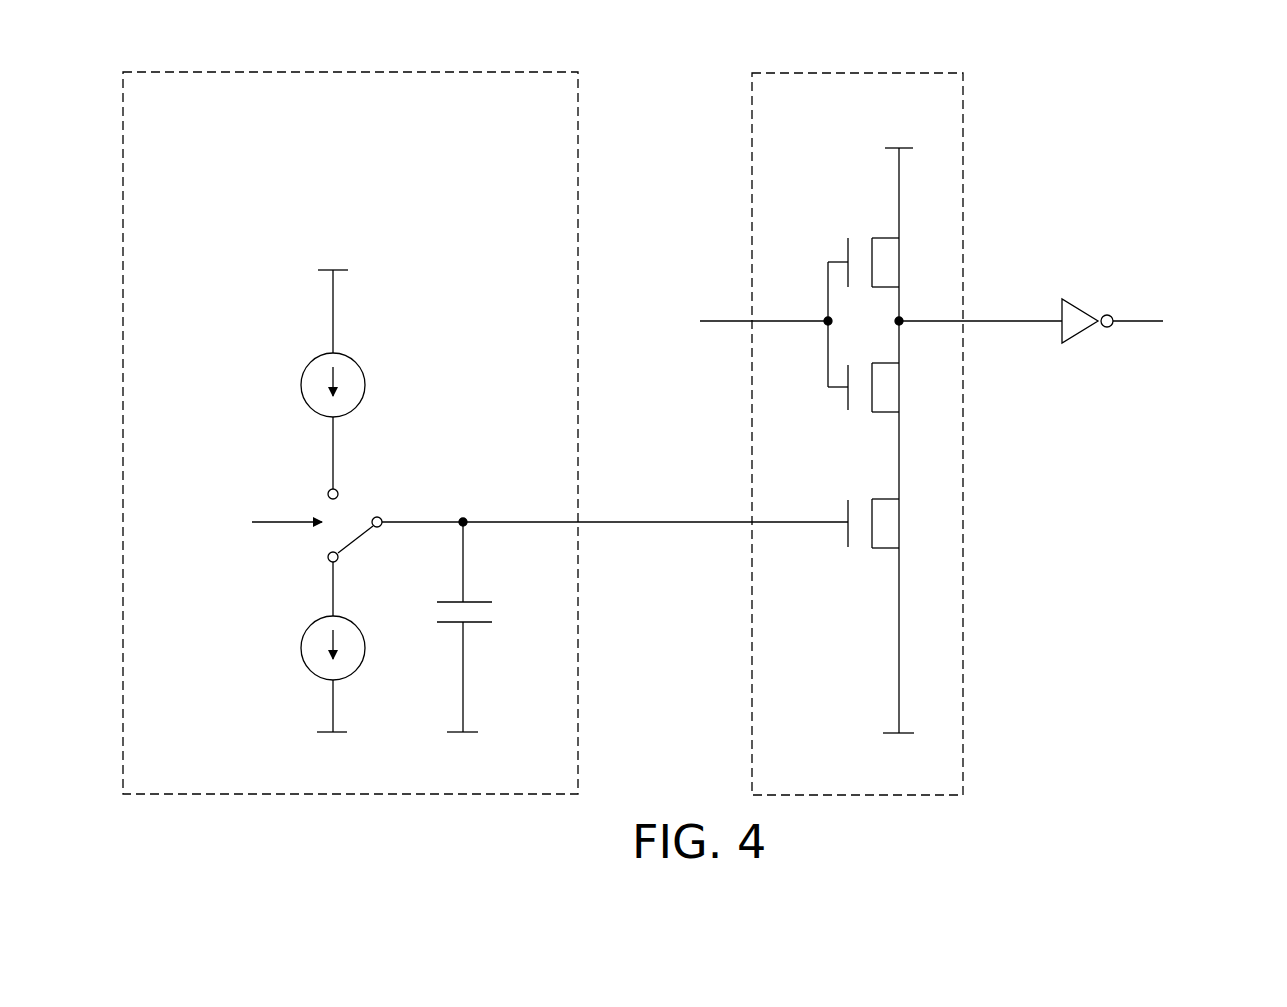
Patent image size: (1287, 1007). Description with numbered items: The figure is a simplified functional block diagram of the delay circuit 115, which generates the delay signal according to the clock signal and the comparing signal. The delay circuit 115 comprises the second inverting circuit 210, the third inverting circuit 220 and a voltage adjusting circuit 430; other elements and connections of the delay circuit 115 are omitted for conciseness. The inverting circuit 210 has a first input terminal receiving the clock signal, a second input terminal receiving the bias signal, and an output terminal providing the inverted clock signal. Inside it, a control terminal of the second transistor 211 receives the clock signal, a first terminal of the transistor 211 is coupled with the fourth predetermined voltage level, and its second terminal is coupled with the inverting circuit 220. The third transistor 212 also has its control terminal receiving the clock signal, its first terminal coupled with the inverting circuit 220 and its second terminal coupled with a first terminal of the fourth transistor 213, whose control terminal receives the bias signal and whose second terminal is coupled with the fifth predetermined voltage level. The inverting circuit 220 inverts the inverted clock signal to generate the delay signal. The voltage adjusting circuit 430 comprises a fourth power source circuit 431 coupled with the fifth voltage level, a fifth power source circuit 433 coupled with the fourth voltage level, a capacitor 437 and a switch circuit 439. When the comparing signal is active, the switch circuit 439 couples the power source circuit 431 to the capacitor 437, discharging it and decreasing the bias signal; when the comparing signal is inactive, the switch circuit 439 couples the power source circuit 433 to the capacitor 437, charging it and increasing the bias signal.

The delay circuit 115 is at (1118, 147).
The second inverting circuit 210 is at (752, 140).
The second transistor 211 is at (858, 236).
The third transistor 212 is at (860, 421).
The fourth transistor 213 is at (860, 566).
The third inverting circuit 220 is at (1078, 327).
The voltage adjusting circuit 430 is at (578, 208).
The fourth power source circuit 431 is at (356, 620).
The fifth power source circuit 433 is at (356, 360).
The capacitor 437 is at (487, 611).
The switch circuit 439 is at (364, 495).